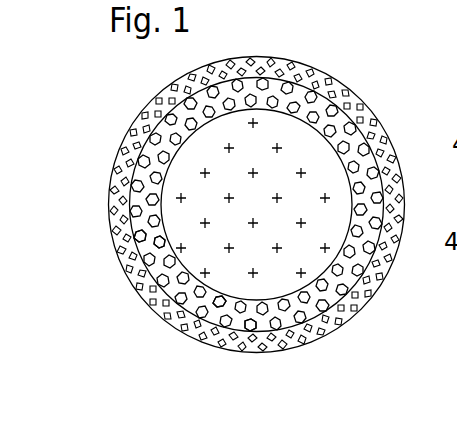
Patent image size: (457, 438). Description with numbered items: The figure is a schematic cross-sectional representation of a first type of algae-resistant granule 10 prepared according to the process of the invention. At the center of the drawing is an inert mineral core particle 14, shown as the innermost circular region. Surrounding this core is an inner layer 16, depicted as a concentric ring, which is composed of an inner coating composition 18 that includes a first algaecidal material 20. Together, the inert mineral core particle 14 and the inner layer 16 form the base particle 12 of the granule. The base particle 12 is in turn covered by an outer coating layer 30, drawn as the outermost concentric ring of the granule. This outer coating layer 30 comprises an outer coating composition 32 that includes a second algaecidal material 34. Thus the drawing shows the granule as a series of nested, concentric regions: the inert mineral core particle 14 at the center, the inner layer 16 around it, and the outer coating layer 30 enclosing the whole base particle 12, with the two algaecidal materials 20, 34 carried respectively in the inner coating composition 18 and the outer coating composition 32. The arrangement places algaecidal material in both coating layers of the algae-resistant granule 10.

The algae-resistant granule 10 is at (100, 114).
The base particle 12 is at (162, 197).
The inert mineral core particle 14 is at (250, 203).
The inner layer 16 is at (152, 242).
The inner coating composition 18 is at (185, 285).
The first algaecidal material 20 is at (248, 320).
The outer coating layer 30 is at (273, 340).
The outer coating composition 32 is at (363, 298).
The second algaecidal material 34 is at (338, 325).